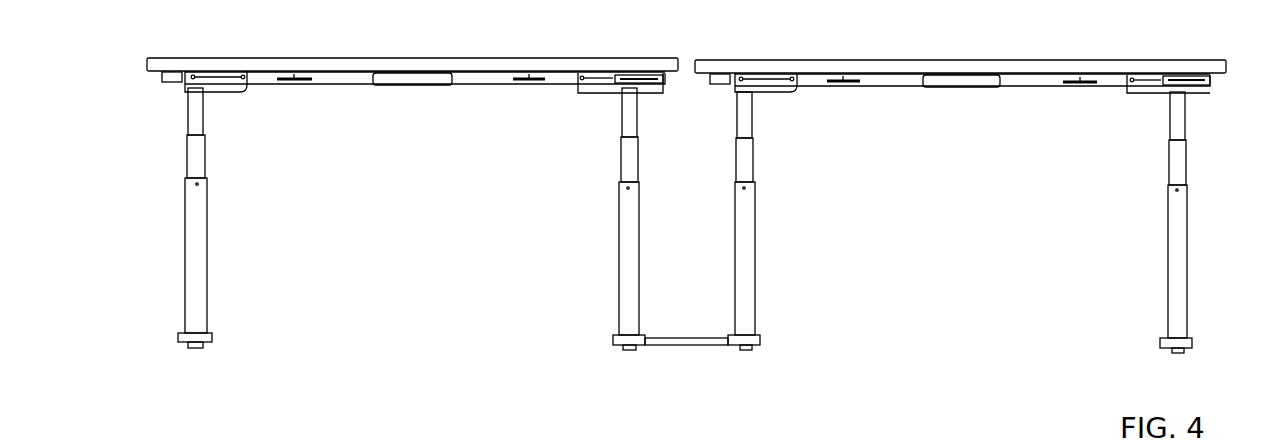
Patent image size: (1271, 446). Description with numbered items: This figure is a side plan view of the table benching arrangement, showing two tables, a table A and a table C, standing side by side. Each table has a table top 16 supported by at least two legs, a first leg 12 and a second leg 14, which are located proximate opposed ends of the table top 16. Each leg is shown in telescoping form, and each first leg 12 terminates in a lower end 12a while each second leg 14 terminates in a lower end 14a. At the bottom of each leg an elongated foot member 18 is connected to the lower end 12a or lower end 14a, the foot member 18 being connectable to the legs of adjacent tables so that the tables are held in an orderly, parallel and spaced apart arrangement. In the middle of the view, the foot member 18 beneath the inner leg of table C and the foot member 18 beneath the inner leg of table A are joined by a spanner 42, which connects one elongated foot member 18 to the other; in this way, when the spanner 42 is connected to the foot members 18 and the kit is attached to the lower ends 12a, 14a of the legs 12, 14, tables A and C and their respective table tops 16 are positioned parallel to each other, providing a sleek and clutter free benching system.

The first leg 12 is at (905, 213).
The lower end of first leg 12a is at (628, 325).
The second leg 14 is at (468, 211).
The lower end of second leg 14a is at (195, 325).
The table top 16 is at (284, 63).
The elongated foot member 18 is at (180, 338).
The spanner 42 is at (686, 348).
The table C is at (518, 57).
The table A is at (1027, 60).